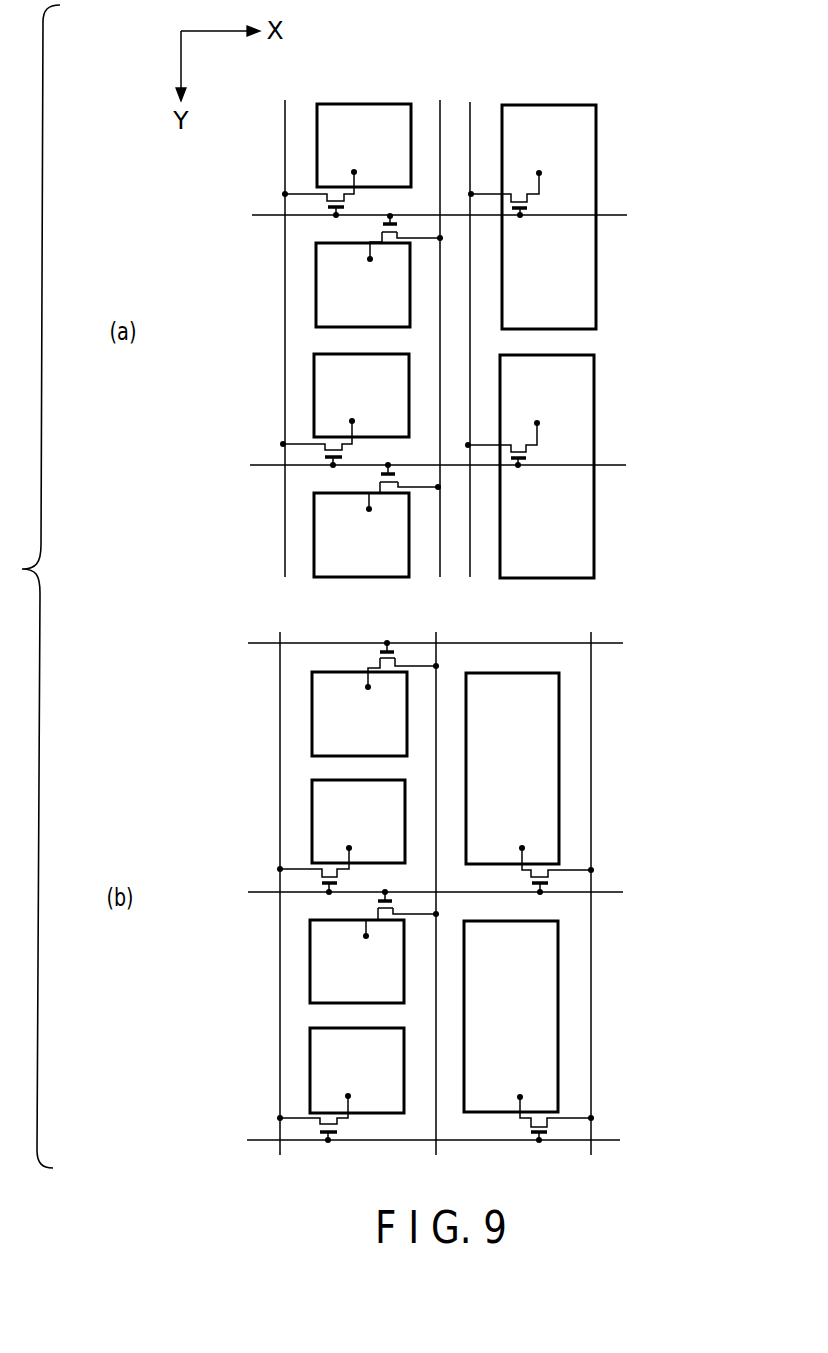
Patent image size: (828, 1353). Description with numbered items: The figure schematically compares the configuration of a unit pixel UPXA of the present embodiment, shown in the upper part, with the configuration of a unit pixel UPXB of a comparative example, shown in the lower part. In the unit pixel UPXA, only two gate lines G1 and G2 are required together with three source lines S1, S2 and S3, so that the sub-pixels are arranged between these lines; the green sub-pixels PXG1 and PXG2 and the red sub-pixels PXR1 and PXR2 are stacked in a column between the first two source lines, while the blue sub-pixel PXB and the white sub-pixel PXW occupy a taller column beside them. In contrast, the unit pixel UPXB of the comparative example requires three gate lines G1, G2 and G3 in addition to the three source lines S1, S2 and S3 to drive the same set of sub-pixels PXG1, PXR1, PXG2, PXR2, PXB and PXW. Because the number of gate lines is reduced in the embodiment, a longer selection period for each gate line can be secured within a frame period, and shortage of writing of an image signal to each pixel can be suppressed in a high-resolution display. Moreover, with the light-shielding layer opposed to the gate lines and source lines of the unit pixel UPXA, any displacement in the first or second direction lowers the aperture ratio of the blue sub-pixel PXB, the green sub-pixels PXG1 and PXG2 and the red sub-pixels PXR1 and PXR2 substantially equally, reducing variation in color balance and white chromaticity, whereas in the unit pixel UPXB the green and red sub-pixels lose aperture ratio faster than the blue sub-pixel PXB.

The source line S1 is at (283, 612).
The source line S2 is at (438, 611).
The source line S3 is at (533, 611).
The gate line G1 is at (420, 428).
The gate line G2 is at (419, 678).
The gate line G3 is at (415, 1139).
The green sub-pixel PXG1 is at (361, 430).
The red sub-pixel PXR1 is at (361, 553).
The green sub-pixel PXG2 is at (359, 678).
The red sub-pixel PXR2 is at (359, 803).
The blue sub-pixel PXB is at (531, 484).
The white pixel PXW is at (529, 733).
The unit pixel UPXA is at (653, 130).
The unit pixel UPXB is at (664, 688).